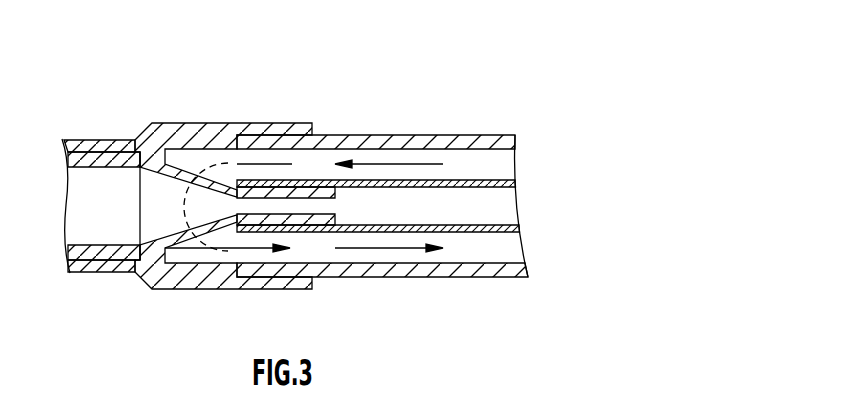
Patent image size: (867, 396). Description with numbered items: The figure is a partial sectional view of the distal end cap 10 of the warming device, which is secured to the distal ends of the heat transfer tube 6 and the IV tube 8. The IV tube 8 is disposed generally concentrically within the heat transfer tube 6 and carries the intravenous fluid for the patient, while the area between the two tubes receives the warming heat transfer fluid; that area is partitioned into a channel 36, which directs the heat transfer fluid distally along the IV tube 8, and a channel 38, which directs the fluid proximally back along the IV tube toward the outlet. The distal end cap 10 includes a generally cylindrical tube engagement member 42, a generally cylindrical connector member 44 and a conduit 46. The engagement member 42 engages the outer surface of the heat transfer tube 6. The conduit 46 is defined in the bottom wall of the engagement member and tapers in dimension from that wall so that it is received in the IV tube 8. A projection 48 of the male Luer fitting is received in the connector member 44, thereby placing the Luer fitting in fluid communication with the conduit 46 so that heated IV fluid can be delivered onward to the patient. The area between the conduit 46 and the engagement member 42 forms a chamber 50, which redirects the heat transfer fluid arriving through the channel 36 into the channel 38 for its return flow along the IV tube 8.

The distal end cap 10 is at (320, 187).
The heat transfer tube 6 is at (422, 135).
The IV tube 8 is at (498, 223).
The channel 36 is at (510, 164).
The channel 38 is at (502, 248).
The tube engagement member 42 is at (213, 127).
The connector member 44 is at (122, 140).
The conduit 46 is at (189, 232).
The projection 48 is at (90, 156).
The chamber 50 is at (204, 252).